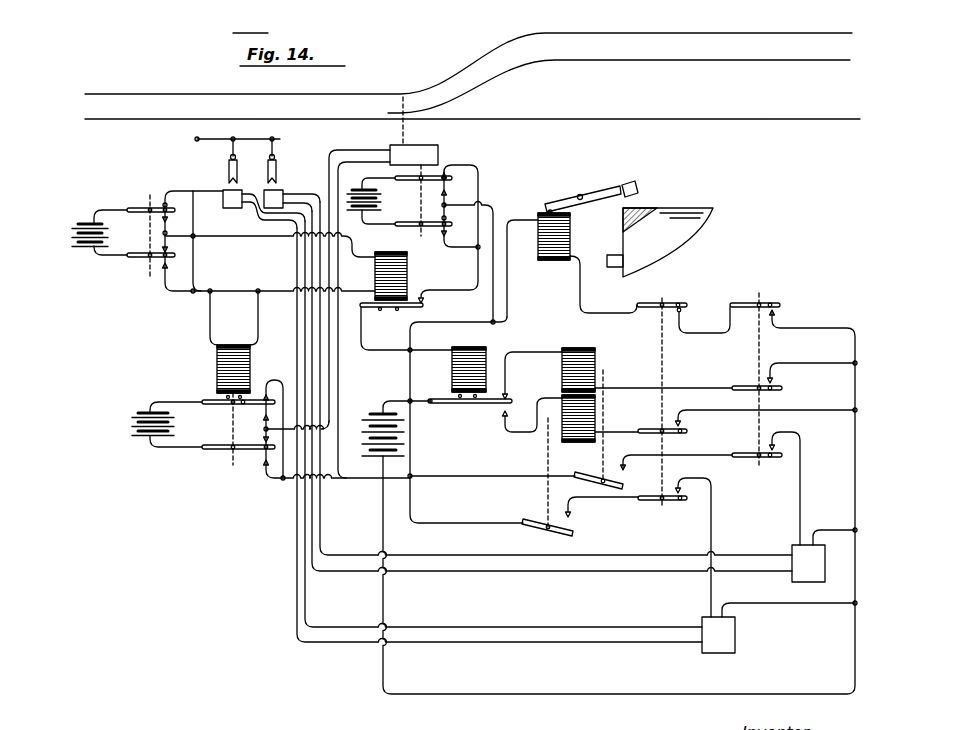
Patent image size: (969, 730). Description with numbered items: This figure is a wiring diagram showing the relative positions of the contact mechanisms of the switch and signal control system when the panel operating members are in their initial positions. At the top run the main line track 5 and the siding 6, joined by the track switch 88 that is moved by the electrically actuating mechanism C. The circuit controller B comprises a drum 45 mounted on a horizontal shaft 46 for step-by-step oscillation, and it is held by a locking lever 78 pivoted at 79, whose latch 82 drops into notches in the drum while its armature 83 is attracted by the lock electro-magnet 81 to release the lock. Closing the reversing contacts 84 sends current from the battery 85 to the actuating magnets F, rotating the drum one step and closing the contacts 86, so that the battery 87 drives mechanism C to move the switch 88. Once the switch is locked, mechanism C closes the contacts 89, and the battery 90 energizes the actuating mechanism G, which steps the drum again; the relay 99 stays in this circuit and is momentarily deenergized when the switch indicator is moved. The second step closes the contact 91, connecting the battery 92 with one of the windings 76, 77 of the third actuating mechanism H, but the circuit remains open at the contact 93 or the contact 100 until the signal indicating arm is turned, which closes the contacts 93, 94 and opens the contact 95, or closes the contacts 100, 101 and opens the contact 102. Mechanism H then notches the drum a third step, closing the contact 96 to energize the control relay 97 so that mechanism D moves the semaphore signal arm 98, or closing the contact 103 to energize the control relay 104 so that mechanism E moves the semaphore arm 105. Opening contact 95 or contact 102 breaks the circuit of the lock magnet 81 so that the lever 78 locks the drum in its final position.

The main line track 5 is at (680, 103).
The siding 6 is at (692, 48).
The drum 45 is at (695, 210).
The horizontal shaft 46 is at (613, 268).
The winding 76 is at (598, 376).
The winding 77 is at (560, 432).
The locking lever 78 is at (610, 185).
The pivot 79 is at (580, 194).
The electro-magnet 81 is at (572, 240).
The latch 82 is at (638, 190).
The armature 83 is at (622, 214).
The reversing contacts 84 is at (142, 269).
The battery 85 is at (106, 247).
The contacts 86 is at (246, 466).
The battery 87 is at (128, 432).
The switch 88 is at (414, 101).
The contacts 89 is at (462, 194).
The battery 90 is at (378, 210).
The contact 91 is at (490, 408).
The battery 92 is at (365, 423).
The contact 93 is at (752, 379).
The contact 94 is at (749, 448).
The contact 95 is at (748, 302).
The contact 96 is at (626, 490).
The control relay 97 is at (820, 579).
The semaphore signal arm 98 is at (277, 162).
The relay 99 is at (408, 281).
The contact 100 is at (649, 425).
The contact 101 is at (652, 503).
The contact 102 is at (660, 300).
The contact 103 is at (525, 530).
The control relay 104 is at (737, 635).
The semaphore arm 105 is at (228, 158).
The circuit controlling device B is at (659, 208).
The electrically actuating mechanism C is at (438, 147).
The electrically actuated mechanism D is at (284, 190).
The electrically actuated mechanism E is at (222, 190).
The actuating magnets F is at (207, 372).
The actuating mechanism G is at (445, 378).
The third actuating mechanism H is at (555, 374).